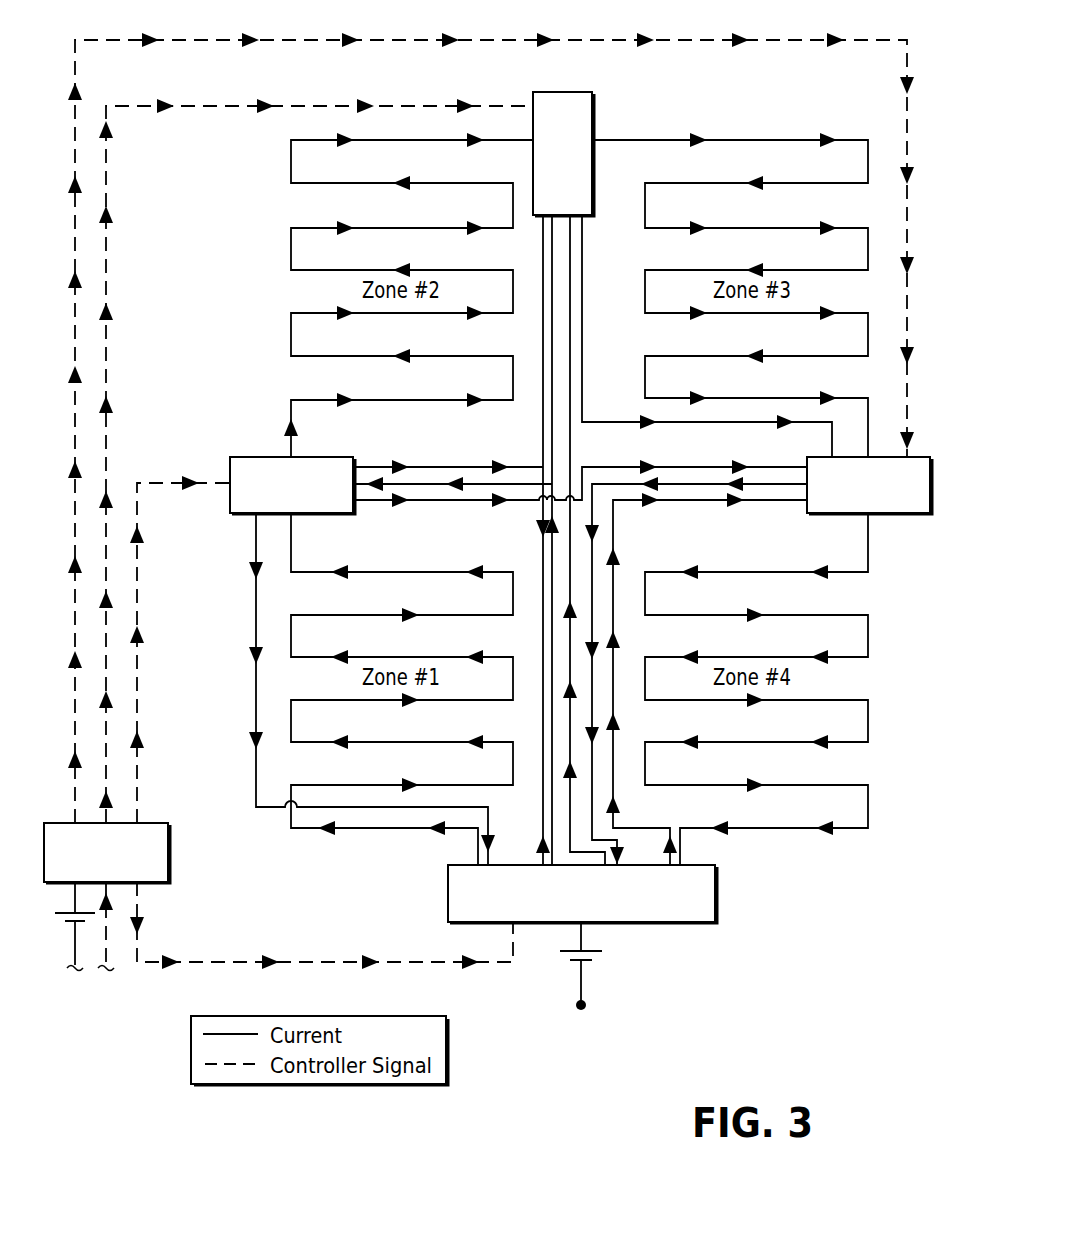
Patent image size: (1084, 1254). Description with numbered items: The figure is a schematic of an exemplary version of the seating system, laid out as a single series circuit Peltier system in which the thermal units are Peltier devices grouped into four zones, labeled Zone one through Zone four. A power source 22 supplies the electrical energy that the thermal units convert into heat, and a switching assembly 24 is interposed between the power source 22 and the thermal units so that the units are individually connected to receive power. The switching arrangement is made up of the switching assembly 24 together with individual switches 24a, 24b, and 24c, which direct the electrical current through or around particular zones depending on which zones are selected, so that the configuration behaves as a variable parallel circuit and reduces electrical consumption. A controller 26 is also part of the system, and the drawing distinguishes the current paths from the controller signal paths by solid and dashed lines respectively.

The power source 22 is at (588, 962).
The switching assembly 24 is at (690, 925).
The individual switch 24a is at (260, 457).
The individual switch 24b is at (592, 118).
The individual switch 24c is at (882, 513).
The controller 26 is at (155, 882).